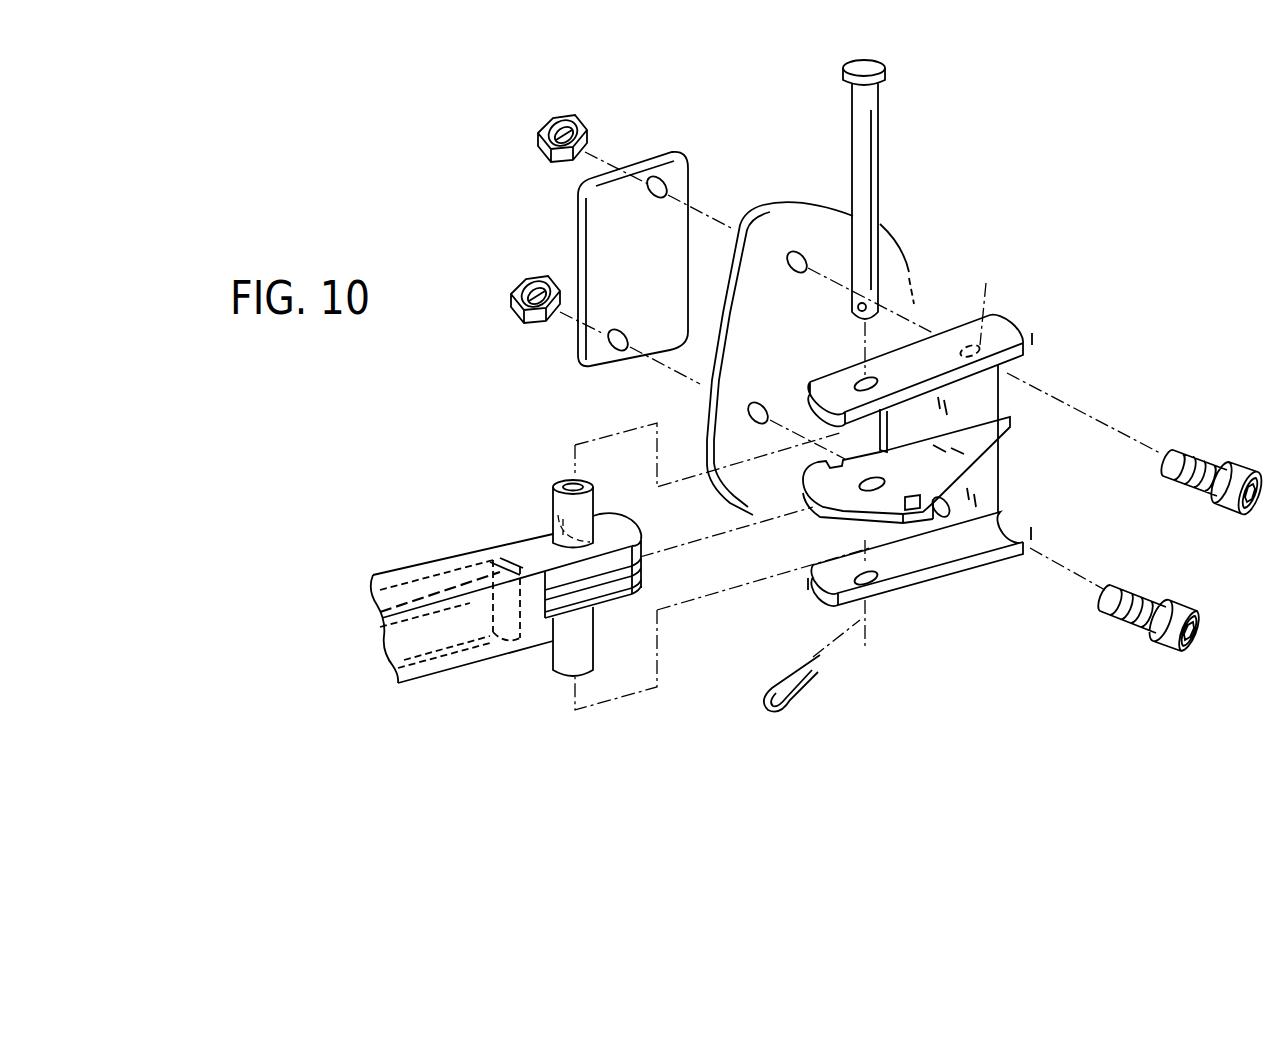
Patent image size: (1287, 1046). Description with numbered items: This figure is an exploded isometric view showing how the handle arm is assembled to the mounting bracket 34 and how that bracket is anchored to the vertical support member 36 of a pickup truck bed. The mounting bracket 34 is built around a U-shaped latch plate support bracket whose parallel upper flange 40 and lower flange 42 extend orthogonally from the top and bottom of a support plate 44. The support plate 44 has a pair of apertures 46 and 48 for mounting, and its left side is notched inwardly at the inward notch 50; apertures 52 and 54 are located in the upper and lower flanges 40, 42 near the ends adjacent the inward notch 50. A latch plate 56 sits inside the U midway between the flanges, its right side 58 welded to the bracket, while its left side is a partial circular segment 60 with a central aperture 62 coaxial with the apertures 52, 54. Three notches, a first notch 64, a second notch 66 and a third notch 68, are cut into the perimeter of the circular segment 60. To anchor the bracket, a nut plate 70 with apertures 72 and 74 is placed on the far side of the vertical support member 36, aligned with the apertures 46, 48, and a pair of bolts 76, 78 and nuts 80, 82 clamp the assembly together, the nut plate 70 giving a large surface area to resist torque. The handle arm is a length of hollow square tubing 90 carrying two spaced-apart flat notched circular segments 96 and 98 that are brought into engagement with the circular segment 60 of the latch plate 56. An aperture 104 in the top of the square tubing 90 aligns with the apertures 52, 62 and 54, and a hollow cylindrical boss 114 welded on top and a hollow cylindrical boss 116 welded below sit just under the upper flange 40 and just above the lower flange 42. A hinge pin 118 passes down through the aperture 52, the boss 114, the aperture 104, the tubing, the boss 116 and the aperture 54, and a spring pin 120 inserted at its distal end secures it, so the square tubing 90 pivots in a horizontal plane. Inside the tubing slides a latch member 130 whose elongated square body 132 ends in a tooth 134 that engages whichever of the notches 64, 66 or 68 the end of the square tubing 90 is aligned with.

The mounting bracket 34 is at (910, 460).
The vertical support member 36 is at (767, 347).
The upper flange 40 is at (942, 341).
The lower flange 42 is at (938, 575).
The support plate 44 is at (985, 395).
The aperture 46 is at (979, 307).
The aperture 48 is at (953, 507).
The inward notch 50 is at (840, 442).
The aperture 52 is at (888, 380).
The aperture 54 is at (847, 573).
The latch plate 56 is at (902, 527).
The right side 58 is at (904, 516).
The partial circular segment 60 is at (857, 500).
The aperture 62 is at (877, 470).
The first notch 64 is at (830, 452).
The second notch 66 is at (820, 502).
The third notch 68 is at (913, 498).
The nut plate 70 is at (628, 288).
The aperture 72 is at (668, 188).
The aperture 74 is at (618, 352).
The bolt 76 is at (1222, 462).
The bolt 78 is at (1163, 600).
The nut 80 is at (538, 133).
The nut 82 is at (528, 322).
The hollow square tubing 90 is at (487, 639).
The notched circular segment 96 is at (573, 584).
The notched circular segment 98 is at (607, 610).
The aperture 104 is at (560, 520).
The hollow cylindrical boss 114 is at (573, 482).
The hollow cylindrical boss 116 is at (583, 668).
The hinge pin 118 is at (880, 156).
The spring pin 120 is at (790, 718).
The latch member 130 is at (473, 643).
The elongated square body 132 is at (427, 577).
The tooth 134 is at (530, 600).